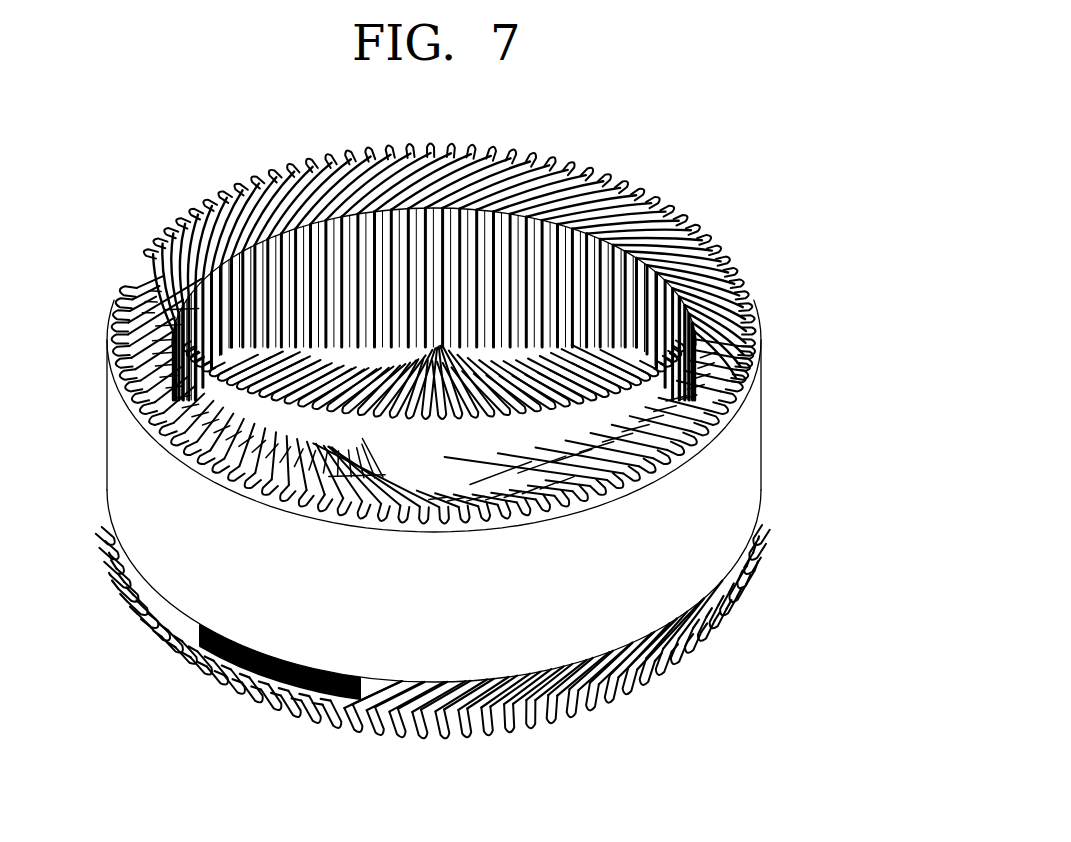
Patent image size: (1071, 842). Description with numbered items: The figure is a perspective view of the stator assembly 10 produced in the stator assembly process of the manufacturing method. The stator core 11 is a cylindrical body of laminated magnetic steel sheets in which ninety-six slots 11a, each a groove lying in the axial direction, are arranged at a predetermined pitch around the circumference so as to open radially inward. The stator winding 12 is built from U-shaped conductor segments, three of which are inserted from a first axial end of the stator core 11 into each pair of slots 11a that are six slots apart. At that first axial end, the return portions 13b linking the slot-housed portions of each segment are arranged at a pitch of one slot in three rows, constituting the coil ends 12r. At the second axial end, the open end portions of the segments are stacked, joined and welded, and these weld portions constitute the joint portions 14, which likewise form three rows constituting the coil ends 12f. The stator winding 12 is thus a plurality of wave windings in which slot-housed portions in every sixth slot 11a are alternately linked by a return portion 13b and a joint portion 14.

The stator assembly 10 is at (112, 214).
The stator core 11 is at (752, 430).
The slots 11a is at (718, 401).
The stator winding 12 is at (738, 256).
The coil ends 12r is at (712, 229).
The coil ends 12f is at (743, 582).
The return portion 13b is at (616, 207).
The joint portions 14 is at (632, 678).